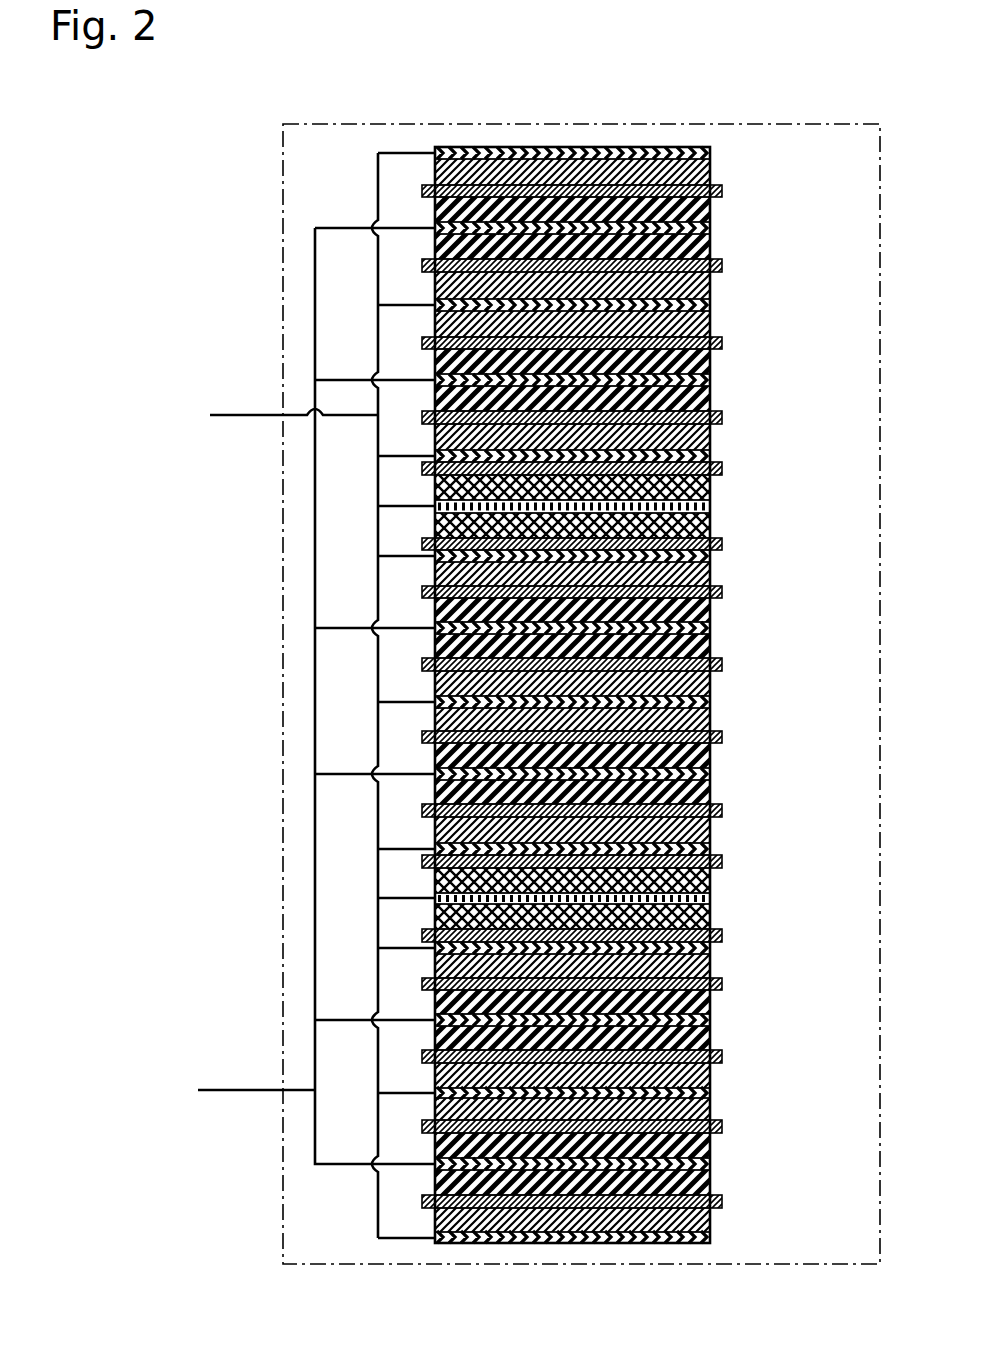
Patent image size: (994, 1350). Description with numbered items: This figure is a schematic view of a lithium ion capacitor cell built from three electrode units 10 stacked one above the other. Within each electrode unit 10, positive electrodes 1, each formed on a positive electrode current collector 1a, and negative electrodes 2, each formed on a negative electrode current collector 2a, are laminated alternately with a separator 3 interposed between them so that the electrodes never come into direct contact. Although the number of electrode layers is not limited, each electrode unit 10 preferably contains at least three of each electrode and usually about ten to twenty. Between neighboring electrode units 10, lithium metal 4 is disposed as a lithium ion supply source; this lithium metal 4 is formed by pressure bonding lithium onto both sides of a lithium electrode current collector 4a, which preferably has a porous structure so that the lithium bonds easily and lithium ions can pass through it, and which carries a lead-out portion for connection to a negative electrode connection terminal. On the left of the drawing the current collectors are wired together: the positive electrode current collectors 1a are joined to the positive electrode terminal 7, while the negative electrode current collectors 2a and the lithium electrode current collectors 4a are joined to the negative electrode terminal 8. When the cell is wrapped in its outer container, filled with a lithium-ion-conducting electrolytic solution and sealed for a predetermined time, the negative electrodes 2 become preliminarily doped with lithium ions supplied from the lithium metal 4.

The positive electrode 1 is at (711, 210).
The positive electrode current collector 1a is at (711, 228).
The negative electrode 2 is at (711, 172).
The negative electrode current collector 2a is at (711, 153).
The separator 3 is at (723, 191).
The lithium metal 4 is at (711, 488).
The lithium electrode current collector 4a is at (711, 506).
The positive electrode terminal 7 is at (247, 1091).
The negative electrode terminal 8 is at (245, 413).
The electrode unit 10 is at (814, 158).